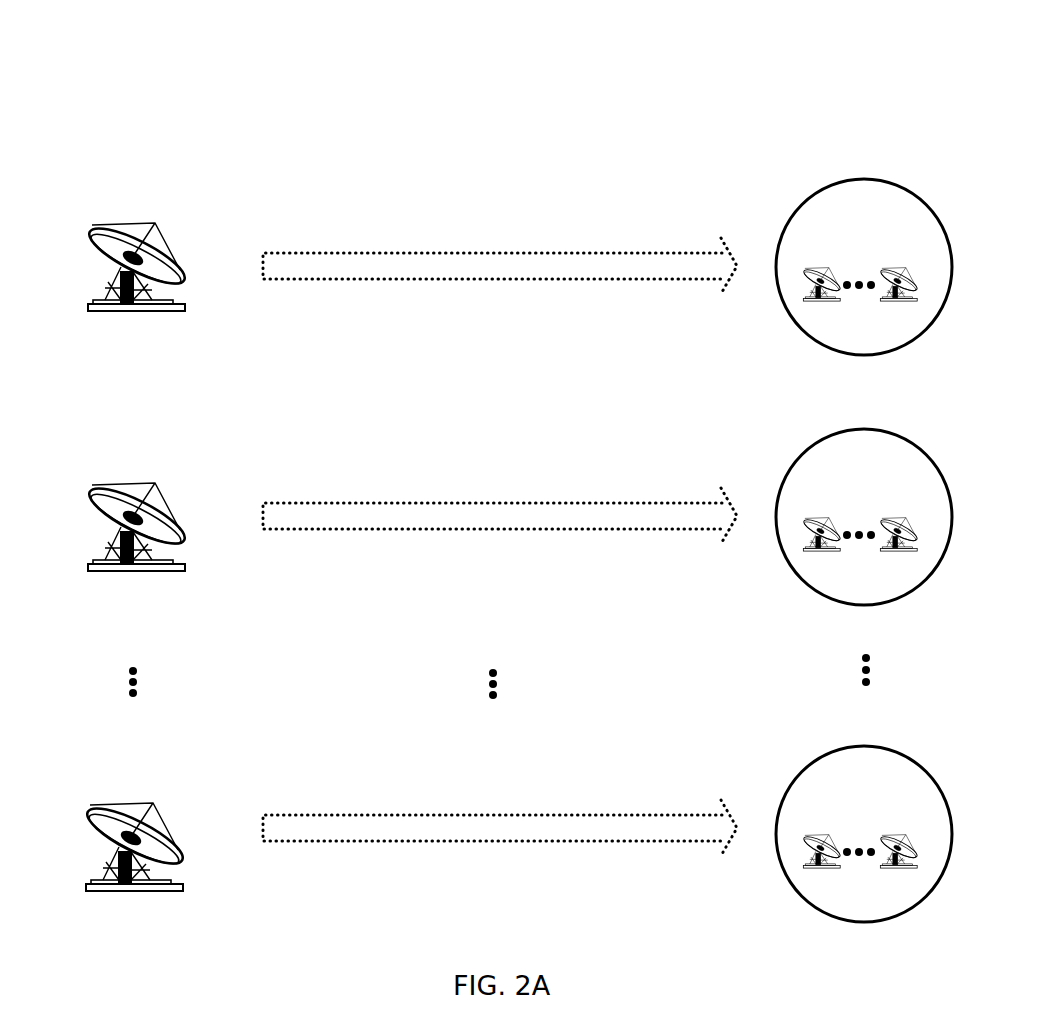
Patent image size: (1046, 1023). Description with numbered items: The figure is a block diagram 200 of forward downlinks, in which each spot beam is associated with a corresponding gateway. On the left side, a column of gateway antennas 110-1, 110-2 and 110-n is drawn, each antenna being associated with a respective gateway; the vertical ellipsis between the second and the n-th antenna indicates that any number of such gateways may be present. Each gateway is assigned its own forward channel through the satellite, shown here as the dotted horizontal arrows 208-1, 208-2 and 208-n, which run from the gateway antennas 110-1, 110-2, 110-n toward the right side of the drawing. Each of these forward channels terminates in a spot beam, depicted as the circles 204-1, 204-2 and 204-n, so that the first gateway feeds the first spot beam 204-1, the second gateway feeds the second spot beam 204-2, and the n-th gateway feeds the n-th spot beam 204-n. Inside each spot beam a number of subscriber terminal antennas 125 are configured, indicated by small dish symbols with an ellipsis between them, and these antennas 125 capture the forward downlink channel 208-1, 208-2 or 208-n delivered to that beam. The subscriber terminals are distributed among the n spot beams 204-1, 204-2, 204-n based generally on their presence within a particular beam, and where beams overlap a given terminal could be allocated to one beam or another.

The diagram of forward downlinks 200 is at (528, 173).
The antenna 110-1 is at (108, 225).
The antenna 110-2 is at (108, 485).
The antenna 110-n is at (106, 805).
The forward channel 208-1 is at (500, 265).
The forward channel 208-2 is at (500, 515).
The forward channel 208-n is at (500, 827).
The spot beam 204-1 is at (862, 180).
The spot beam 204-2 is at (862, 430).
The spot beam 204-n is at (862, 747).
The subscriber terminal antennas 125 is at (860, 542).